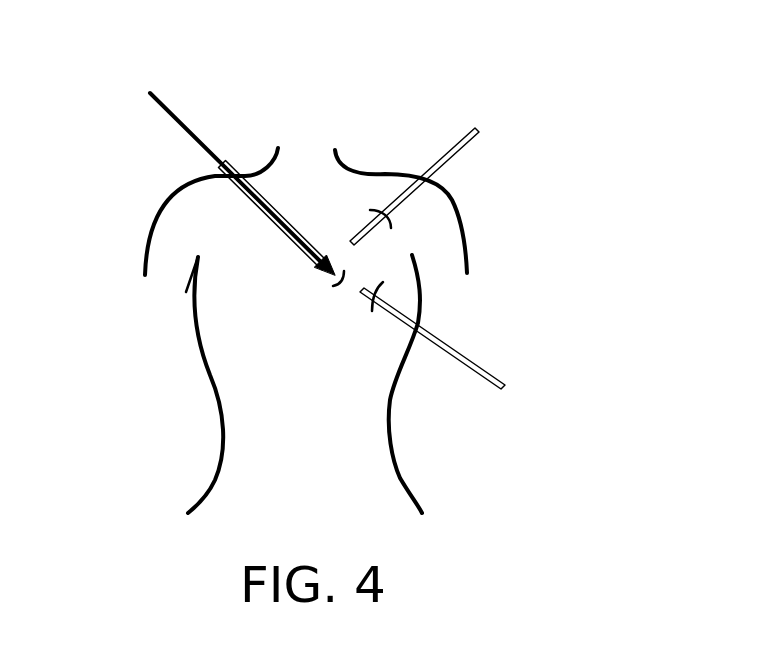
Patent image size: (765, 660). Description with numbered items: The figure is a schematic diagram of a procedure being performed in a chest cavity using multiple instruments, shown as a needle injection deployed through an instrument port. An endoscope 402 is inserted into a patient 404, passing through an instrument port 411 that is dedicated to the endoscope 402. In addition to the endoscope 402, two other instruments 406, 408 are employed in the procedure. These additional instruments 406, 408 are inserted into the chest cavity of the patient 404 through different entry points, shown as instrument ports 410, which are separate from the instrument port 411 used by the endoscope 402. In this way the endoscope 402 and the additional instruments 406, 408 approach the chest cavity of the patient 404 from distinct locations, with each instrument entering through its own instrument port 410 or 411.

The endoscope 402 is at (214, 209).
The patient 404 is at (377, 478).
The instrument 406 is at (456, 130).
The instrument 408 is at (480, 365).
The instrument port 410 is at (377, 213).
The instrument port 411 is at (277, 227).